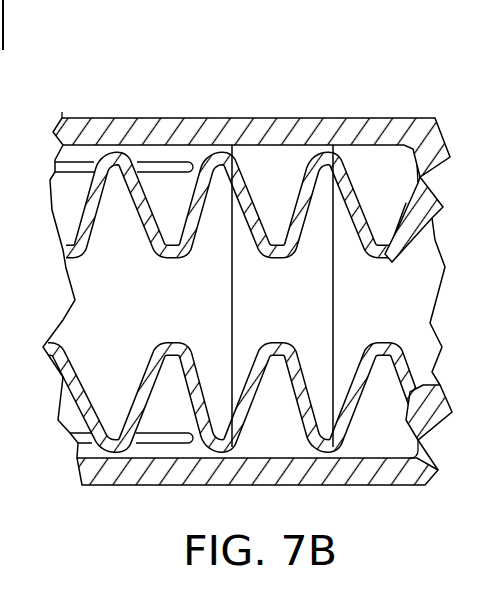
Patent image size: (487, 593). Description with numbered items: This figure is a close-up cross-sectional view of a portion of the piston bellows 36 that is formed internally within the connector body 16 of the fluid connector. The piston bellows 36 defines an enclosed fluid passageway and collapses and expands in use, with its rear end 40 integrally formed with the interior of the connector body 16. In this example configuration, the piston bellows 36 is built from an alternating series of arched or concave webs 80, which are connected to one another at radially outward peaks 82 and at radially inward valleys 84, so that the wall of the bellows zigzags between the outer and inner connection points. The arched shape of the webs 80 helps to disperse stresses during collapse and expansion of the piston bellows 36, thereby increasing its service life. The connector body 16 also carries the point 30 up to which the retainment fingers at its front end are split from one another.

The connector body 16 is at (105, 92).
The point 30 is at (277, 118).
The piston bellows 36 is at (292, 243).
The rear end 40 is at (403, 230).
The arched webs 80 is at (140, 190).
The radially outward peaks 82 is at (226, 118).
The radially inward valleys 84 is at (174, 263).